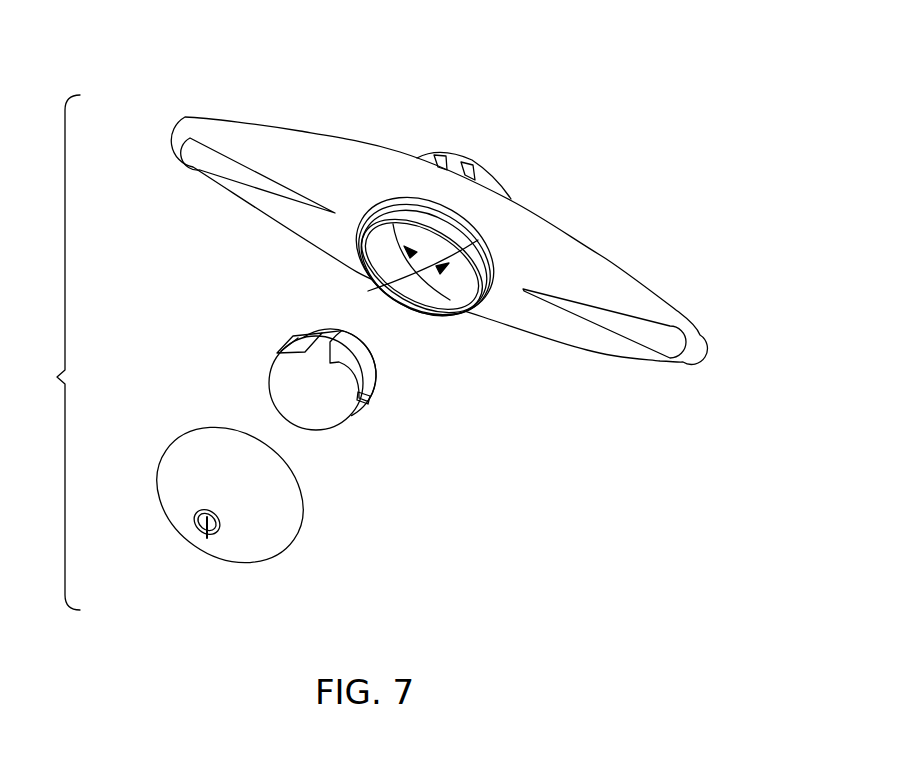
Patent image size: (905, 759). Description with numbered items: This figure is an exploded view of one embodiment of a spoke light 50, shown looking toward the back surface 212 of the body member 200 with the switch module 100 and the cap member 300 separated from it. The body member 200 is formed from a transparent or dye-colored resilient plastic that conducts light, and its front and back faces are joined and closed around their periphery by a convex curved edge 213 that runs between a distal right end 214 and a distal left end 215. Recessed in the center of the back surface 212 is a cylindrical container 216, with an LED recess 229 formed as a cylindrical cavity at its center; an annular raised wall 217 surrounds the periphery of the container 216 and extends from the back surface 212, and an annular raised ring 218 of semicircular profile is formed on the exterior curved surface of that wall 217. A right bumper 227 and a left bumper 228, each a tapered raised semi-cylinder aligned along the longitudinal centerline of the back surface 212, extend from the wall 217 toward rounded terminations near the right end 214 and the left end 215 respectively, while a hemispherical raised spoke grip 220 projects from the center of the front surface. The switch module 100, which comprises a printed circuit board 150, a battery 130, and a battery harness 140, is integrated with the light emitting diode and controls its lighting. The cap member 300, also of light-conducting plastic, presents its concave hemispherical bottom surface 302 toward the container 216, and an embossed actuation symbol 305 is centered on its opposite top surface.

The spoke light 50 is at (328, 70).
The switch module 100 is at (315, 378).
The battery 130 is at (303, 345).
The battery harness 140 is at (283, 378).
The printed circuit board 150 is at (313, 333).
The body member 200 is at (568, 204).
The back surface 212 is at (547, 263).
The convex curved edge 213 is at (317, 243).
The distal right end 214 is at (187, 127).
The distal left end 215 is at (697, 343).
The cylindrical container 216 is at (432, 290).
The annular raised wall 217 is at (424, 308).
The annular raised ring 218 is at (488, 276).
The spoke grip 220 is at (488, 183).
The right bumper 227 is at (192, 163).
The left bumper 228 is at (650, 343).
The LED recess 229 is at (383, 289).
The cap member 300 is at (210, 494).
The concave hemispherical bottom surface 302 is at (264, 495).
The embossed actuation symbol 305 is at (192, 522).